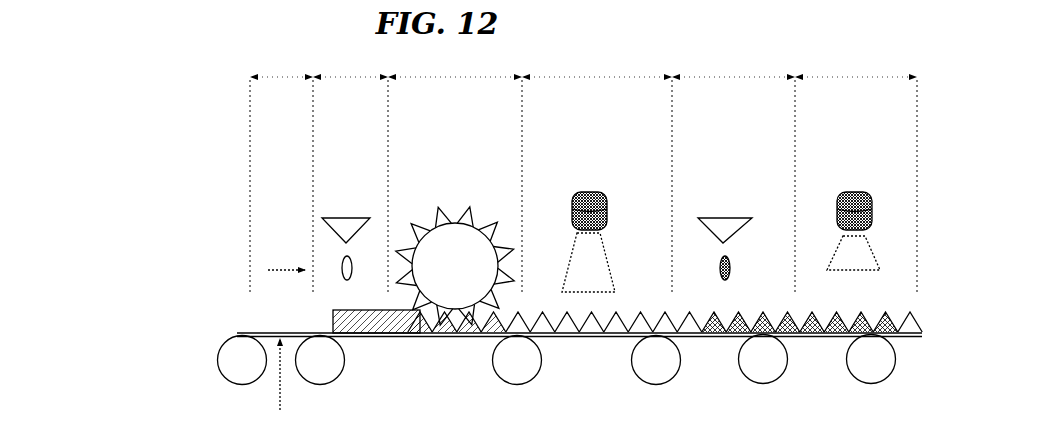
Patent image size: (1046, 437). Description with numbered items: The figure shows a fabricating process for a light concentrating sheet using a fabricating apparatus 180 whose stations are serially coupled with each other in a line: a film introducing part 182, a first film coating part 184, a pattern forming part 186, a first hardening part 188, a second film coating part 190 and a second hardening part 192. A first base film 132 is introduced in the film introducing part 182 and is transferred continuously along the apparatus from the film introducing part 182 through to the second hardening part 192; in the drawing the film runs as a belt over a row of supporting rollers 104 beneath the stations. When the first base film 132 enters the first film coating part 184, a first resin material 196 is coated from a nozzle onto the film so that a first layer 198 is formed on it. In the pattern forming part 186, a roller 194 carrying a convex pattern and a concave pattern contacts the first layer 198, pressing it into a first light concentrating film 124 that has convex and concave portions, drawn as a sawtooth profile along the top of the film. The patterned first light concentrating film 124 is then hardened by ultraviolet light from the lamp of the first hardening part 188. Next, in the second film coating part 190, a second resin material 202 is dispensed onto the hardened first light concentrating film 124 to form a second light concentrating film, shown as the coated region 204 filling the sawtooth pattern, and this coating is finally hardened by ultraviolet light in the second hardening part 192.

The fabricating apparatus 180 is at (128, 288).
The first base film 132 is at (236, 333).
The rollers 104 is at (222, 377).
The film introducing part 182 is at (281, 179).
The first film coating part 184 is at (350, 179).
The pattern forming part 186 is at (455, 179).
The first hardening part 188 is at (597, 179).
The second film coating part 190 is at (733, 179).
The second hardening part 192 is at (856, 179).
The roller 194 is at (461, 203).
The first resin material 196 is at (340, 258).
The first layer 198 is at (414, 331).
The first light concentrating film 124 is at (466, 323).
The second resin material 202 is at (742, 246).
The coated textured surface 204 is at (721, 333).